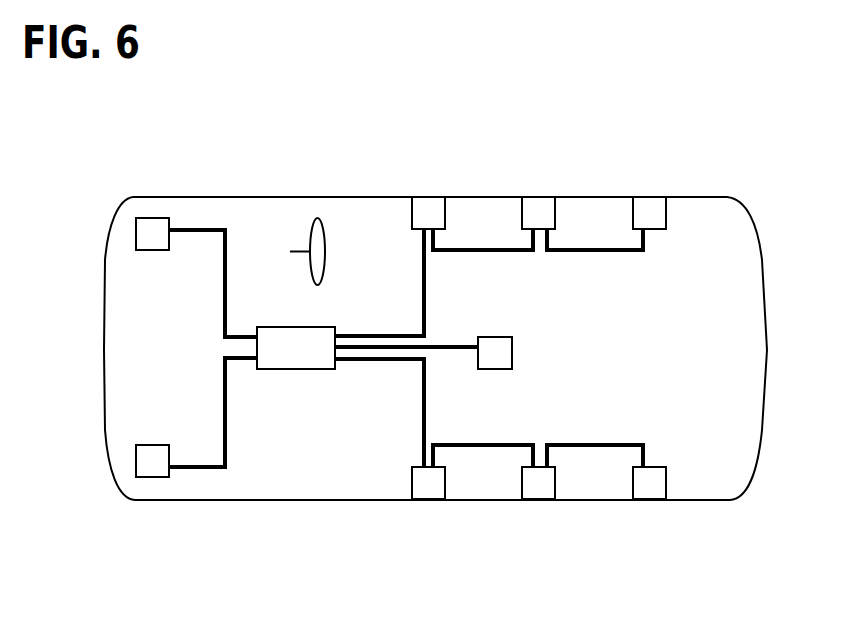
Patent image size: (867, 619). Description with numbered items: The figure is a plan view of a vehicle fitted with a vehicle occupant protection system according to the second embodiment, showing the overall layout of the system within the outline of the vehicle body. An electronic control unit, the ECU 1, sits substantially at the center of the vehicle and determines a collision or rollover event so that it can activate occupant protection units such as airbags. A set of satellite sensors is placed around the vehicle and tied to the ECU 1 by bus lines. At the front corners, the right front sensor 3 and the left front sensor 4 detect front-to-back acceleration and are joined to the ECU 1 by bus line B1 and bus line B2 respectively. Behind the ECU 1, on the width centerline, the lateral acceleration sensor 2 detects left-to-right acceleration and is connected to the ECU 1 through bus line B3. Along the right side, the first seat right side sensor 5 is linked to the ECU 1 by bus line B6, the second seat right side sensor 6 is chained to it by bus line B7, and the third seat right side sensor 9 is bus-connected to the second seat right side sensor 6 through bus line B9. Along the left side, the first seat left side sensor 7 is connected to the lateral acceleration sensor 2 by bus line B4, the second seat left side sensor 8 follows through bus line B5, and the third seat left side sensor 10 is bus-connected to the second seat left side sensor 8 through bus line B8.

The electronic control unit (ECU) 1 is at (296, 348).
The lateral acceleration sensor 2 is at (500, 354).
The right front sensor 3 is at (152, 228).
The left front sensor 4 is at (158, 470).
The first seat right side sensor 5 is at (420, 210).
The second seat right side sensor 6 is at (532, 210).
The first seat left side sensor 7 is at (427, 490).
The second seat left side sensor 8 is at (537, 490).
The third seat right side sensor 9 is at (647, 204).
The third seat left side sensor 10 is at (647, 490).
The bus line B1 is at (225, 275).
The bus line B2 is at (225, 394).
The bus line B3 is at (367, 350).
The bus line B4 is at (424, 427).
The bus line B5 is at (456, 444).
The bus line B6 is at (424, 276).
The bus line B7 is at (456, 251).
The bus line B8 is at (565, 444).
The bus line B9 is at (564, 251).